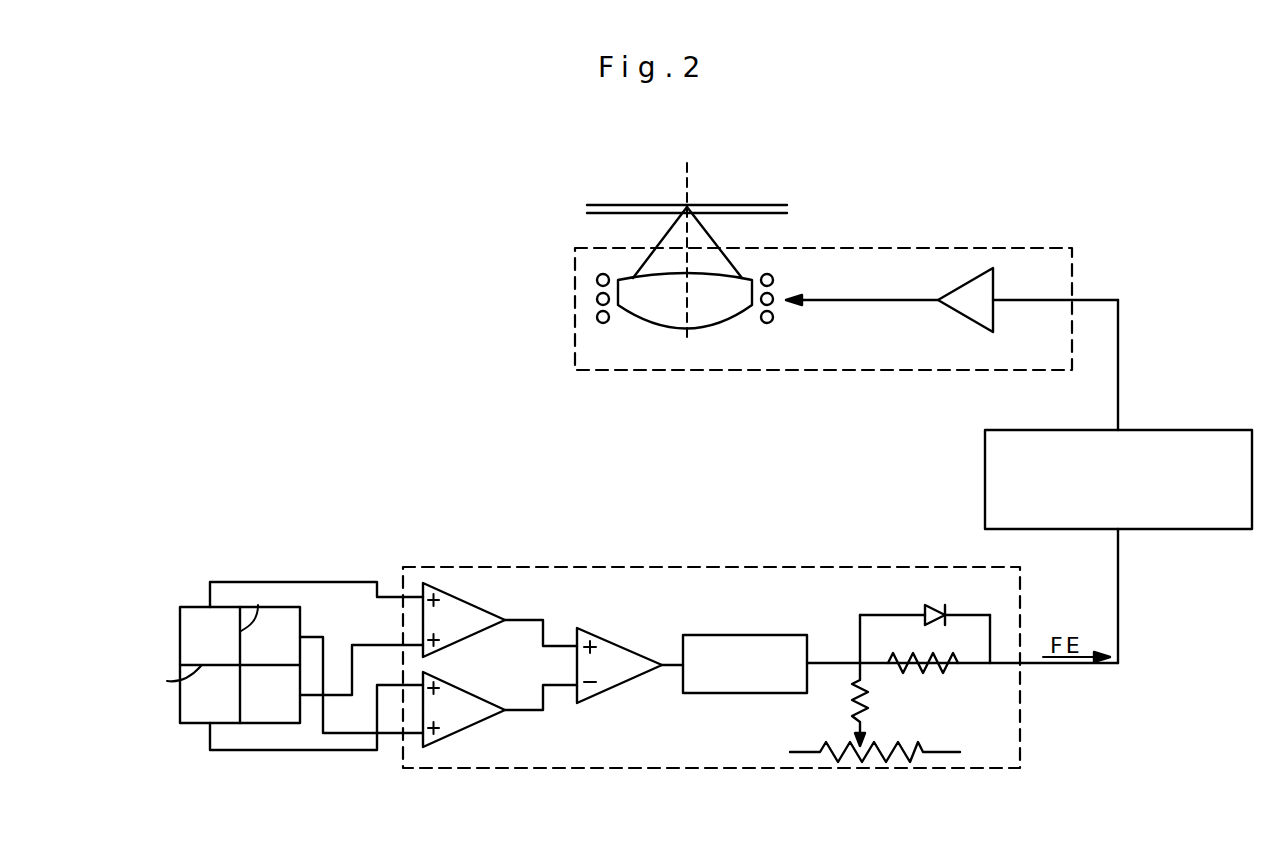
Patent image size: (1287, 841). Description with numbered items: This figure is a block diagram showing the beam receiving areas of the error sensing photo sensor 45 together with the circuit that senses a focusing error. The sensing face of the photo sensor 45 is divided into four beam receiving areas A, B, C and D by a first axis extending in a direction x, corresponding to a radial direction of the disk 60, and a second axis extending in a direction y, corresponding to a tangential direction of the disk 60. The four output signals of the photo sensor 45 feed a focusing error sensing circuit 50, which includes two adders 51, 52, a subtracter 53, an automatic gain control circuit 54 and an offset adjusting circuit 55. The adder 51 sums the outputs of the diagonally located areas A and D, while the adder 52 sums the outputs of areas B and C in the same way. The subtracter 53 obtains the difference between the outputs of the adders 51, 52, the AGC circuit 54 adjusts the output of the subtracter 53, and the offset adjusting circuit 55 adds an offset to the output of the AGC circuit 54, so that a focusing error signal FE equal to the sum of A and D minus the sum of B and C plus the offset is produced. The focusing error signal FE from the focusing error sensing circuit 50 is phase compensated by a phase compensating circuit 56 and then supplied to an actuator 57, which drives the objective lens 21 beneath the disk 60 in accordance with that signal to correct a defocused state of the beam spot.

The objective lens 21 is at (664, 312).
The error sensing photo sensor 45 is at (174, 651).
The focusing error sensing circuit 50 is at (527, 567).
The adder 51 is at (460, 598).
The adder 52 is at (462, 731).
The subtracter 53 is at (620, 685).
The automatic gain control (AGC) circuit 54 is at (719, 693).
The offset adjusting circuit 55 is at (886, 606).
The phase compensating circuit 56 is at (985, 463).
The actuator 57 is at (946, 246).
The disk 60 is at (745, 212).